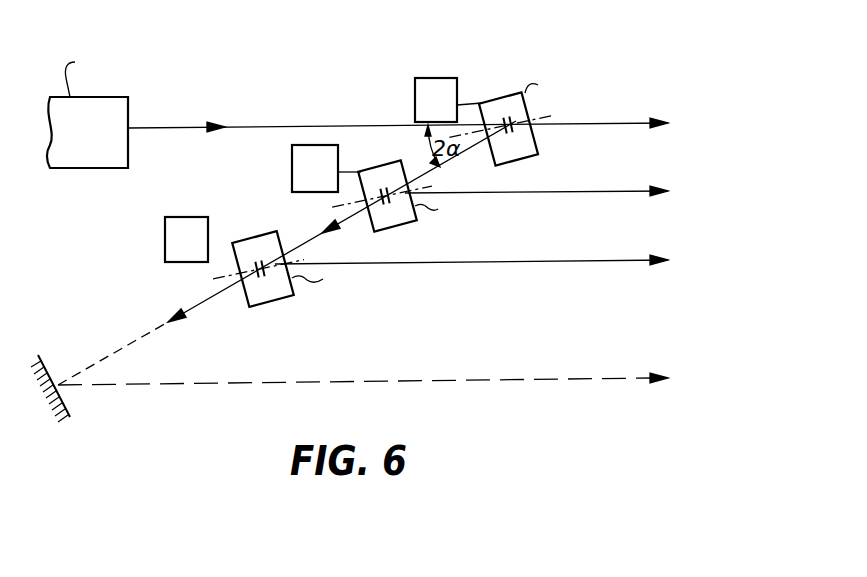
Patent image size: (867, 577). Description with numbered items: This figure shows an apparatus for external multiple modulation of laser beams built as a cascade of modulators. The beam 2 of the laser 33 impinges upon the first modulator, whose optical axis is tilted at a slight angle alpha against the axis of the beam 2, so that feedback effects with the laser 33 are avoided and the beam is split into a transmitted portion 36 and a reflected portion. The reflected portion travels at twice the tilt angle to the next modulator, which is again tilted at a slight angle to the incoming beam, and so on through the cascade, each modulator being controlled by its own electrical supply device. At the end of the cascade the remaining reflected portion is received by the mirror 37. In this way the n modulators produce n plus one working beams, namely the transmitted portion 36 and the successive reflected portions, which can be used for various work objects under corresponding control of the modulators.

The laser 33 is at (102, 145).
The laser beam 2 is at (305, 116).
The transmitted portion 36 is at (596, 124).
The mirror 37 is at (55, 407).